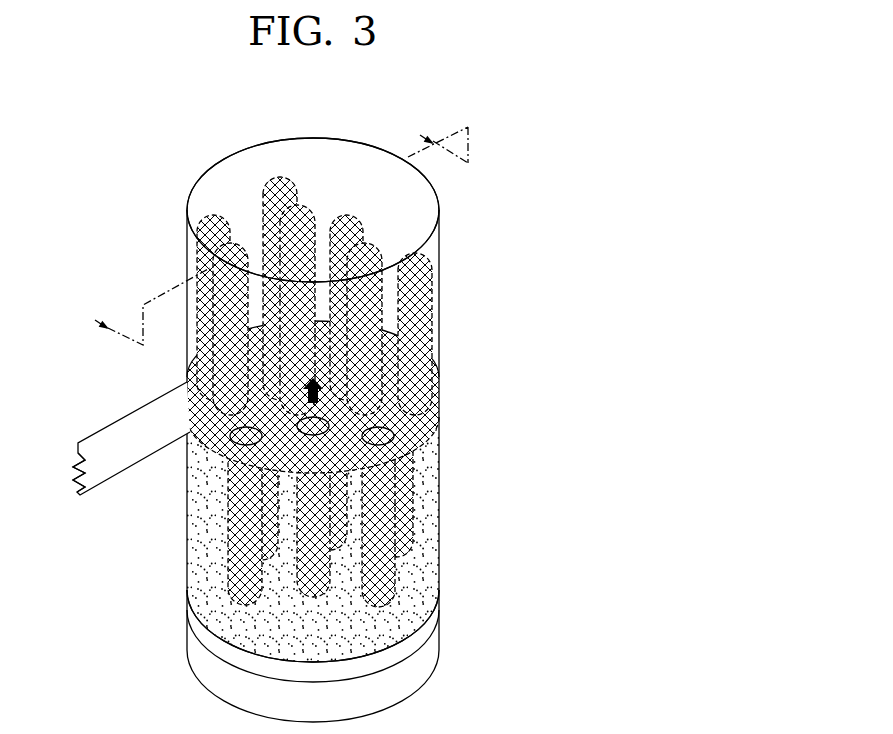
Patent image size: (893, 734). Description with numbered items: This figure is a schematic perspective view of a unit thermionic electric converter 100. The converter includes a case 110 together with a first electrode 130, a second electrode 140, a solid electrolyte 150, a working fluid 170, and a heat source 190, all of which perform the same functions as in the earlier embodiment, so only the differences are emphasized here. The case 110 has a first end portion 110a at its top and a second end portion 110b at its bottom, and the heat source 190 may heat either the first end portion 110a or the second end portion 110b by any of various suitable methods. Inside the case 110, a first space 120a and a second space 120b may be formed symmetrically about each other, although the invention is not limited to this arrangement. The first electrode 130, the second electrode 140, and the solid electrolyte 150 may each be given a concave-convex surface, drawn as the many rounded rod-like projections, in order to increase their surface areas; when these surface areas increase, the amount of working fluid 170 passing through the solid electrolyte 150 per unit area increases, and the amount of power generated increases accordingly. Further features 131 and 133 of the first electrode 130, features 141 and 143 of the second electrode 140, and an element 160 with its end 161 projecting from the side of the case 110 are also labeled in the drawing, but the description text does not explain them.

The unit thermionic electric converter 100 is at (556, 110).
The case 110 is at (377, 400).
The first end portion 110a is at (422, 217).
The second end portion 110b is at (408, 640).
The first space 120a is at (387, 210).
The second space 120b is at (370, 625).
The first electrode 130 is at (400, 296).
The positive electrode current collector 131 is at (428, 263).
The positive electrode active material layer 133 is at (422, 283).
The second electrode 140 is at (415, 518).
The negative electrode current collector 141 is at (412, 522).
The negative electrode active material layer 143 is at (412, 503).
The solid electrolyte 150 is at (415, 447).
The electrode tab 160 is at (105, 438).
The serrated end of electrode tab 161 is at (72, 470).
The working fluid 170 is at (430, 463).
The heat source 190 is at (420, 662).